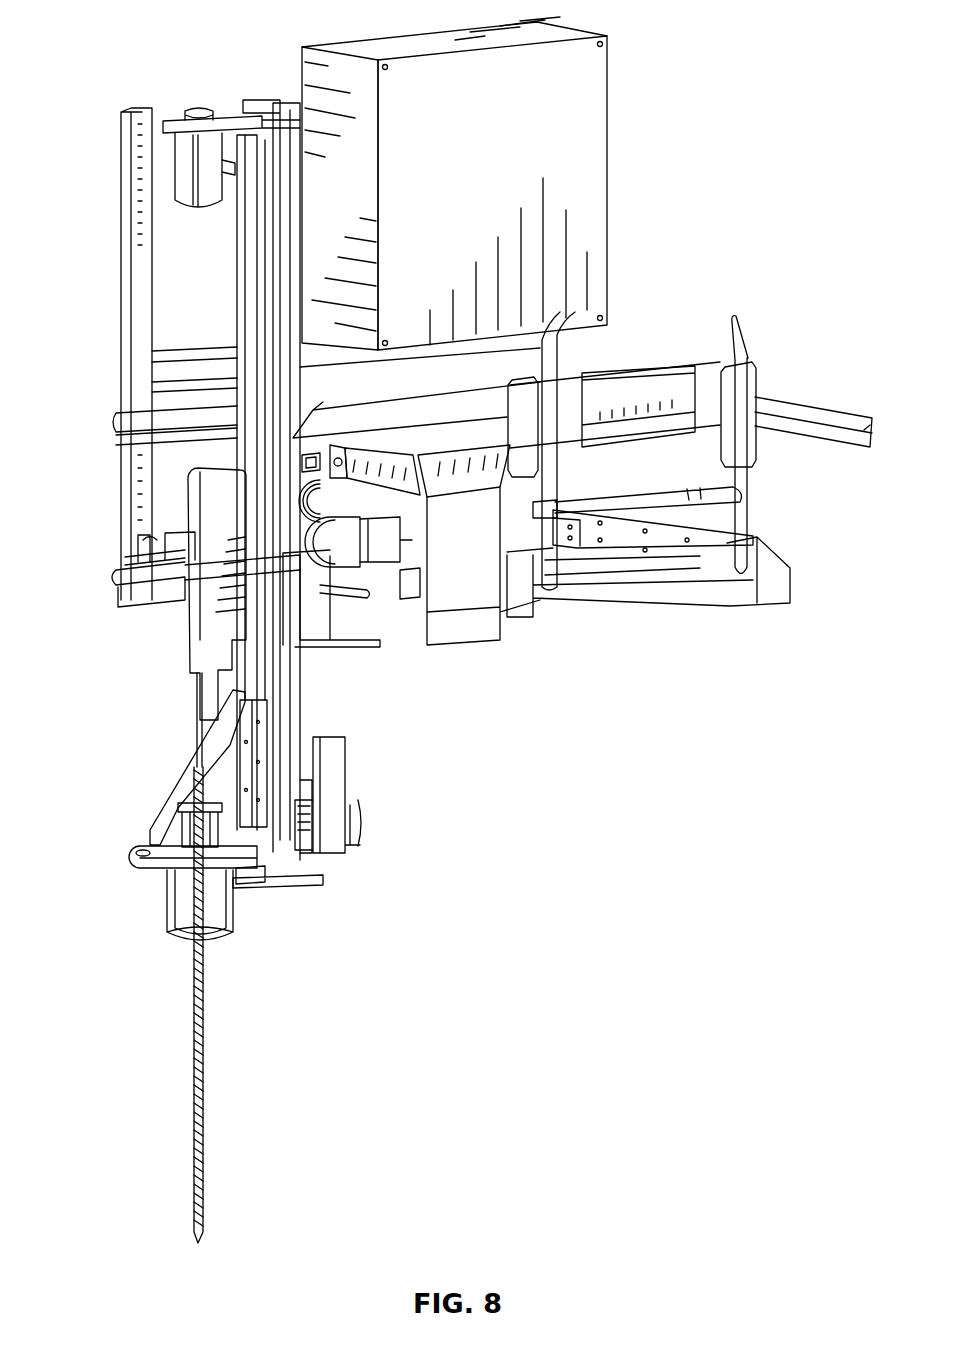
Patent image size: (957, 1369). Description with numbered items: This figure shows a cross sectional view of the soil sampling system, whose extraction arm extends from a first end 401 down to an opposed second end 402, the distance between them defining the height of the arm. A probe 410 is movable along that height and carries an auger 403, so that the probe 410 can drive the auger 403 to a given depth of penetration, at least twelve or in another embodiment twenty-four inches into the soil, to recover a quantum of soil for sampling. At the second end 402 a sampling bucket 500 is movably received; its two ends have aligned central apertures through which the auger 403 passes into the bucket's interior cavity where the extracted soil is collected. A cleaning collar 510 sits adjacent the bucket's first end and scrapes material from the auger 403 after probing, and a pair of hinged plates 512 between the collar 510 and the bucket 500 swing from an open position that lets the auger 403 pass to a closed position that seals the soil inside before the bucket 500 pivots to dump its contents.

The first end 401 is at (125, 122).
The probe 410 is at (190, 628).
The cleaning collar 510 is at (198, 765).
The plates 512 is at (135, 862).
The sampling bucket 500 is at (233, 905).
The second end 402 is at (340, 862).
The auger 403 is at (205, 1080).